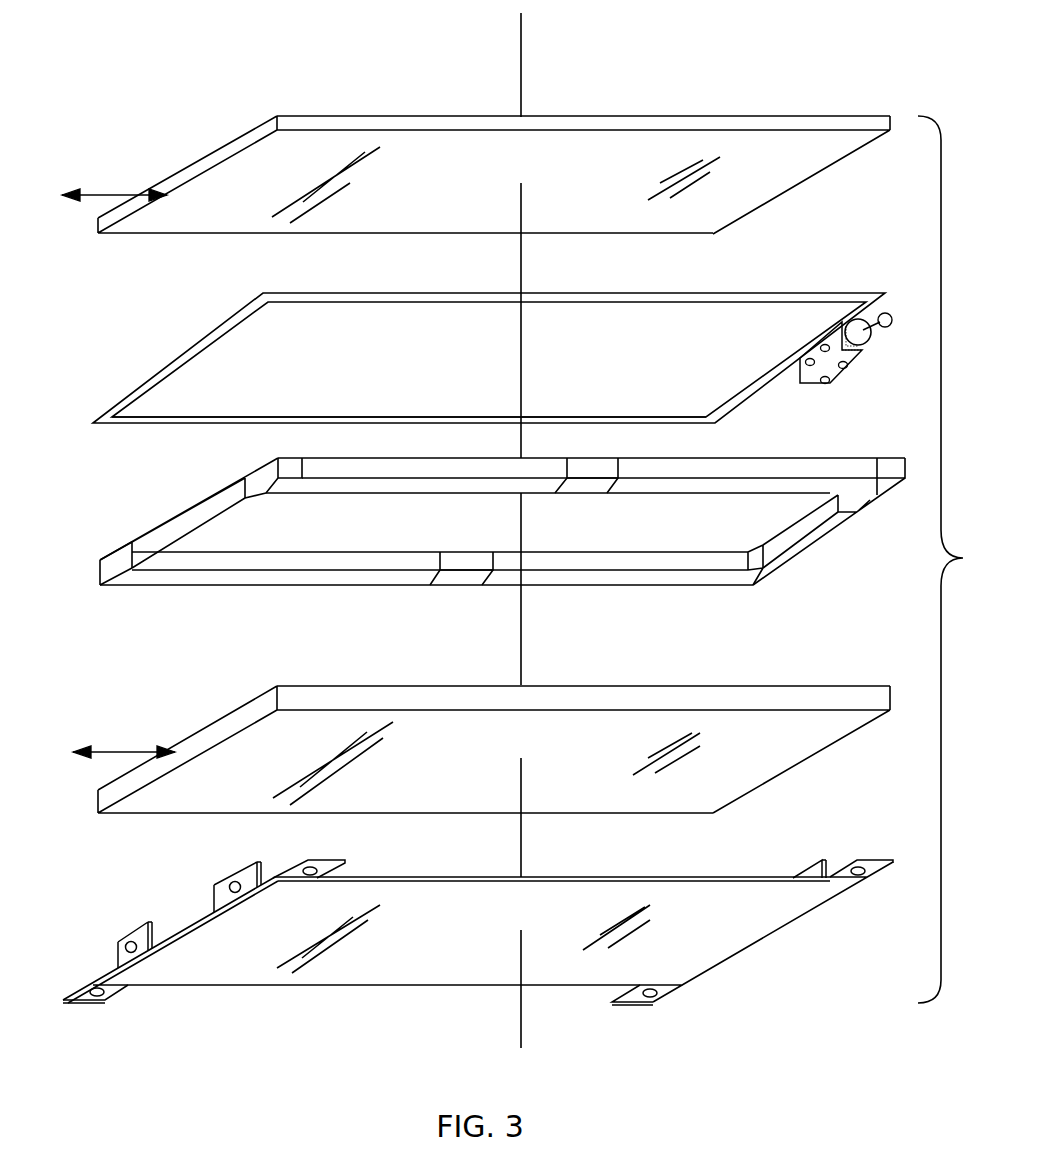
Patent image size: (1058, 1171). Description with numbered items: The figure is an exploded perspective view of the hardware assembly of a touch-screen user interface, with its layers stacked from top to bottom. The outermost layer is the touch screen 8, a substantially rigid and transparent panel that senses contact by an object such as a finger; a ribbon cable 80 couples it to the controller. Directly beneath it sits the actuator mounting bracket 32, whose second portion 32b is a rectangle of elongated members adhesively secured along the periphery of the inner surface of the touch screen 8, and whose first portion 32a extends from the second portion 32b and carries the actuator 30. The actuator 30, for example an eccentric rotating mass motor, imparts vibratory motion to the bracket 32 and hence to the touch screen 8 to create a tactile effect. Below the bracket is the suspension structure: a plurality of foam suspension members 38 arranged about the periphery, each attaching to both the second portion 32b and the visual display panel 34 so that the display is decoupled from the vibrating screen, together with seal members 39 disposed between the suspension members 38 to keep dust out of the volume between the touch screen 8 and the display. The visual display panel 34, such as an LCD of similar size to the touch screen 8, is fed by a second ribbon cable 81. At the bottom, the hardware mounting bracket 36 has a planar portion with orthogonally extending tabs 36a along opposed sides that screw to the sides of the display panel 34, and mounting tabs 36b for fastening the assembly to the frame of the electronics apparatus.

The touch screen 8 is at (860, 112).
The ribbon cable 80 is at (112, 180).
The actuator mounting bracket 32 is at (168, 334).
The second portion 32b is at (333, 415).
The first portion 32a is at (815, 385).
The actuator 30 is at (866, 340).
The suspension members 38 is at (258, 473).
The seal members 39 is at (185, 518).
The ribbon cable 81 is at (123, 738).
The visual display panel 34 is at (818, 748).
The hardware mounting bracket 36 is at (713, 940).
The tabs 36a is at (218, 880).
The mounting tabs 36b is at (113, 1000).